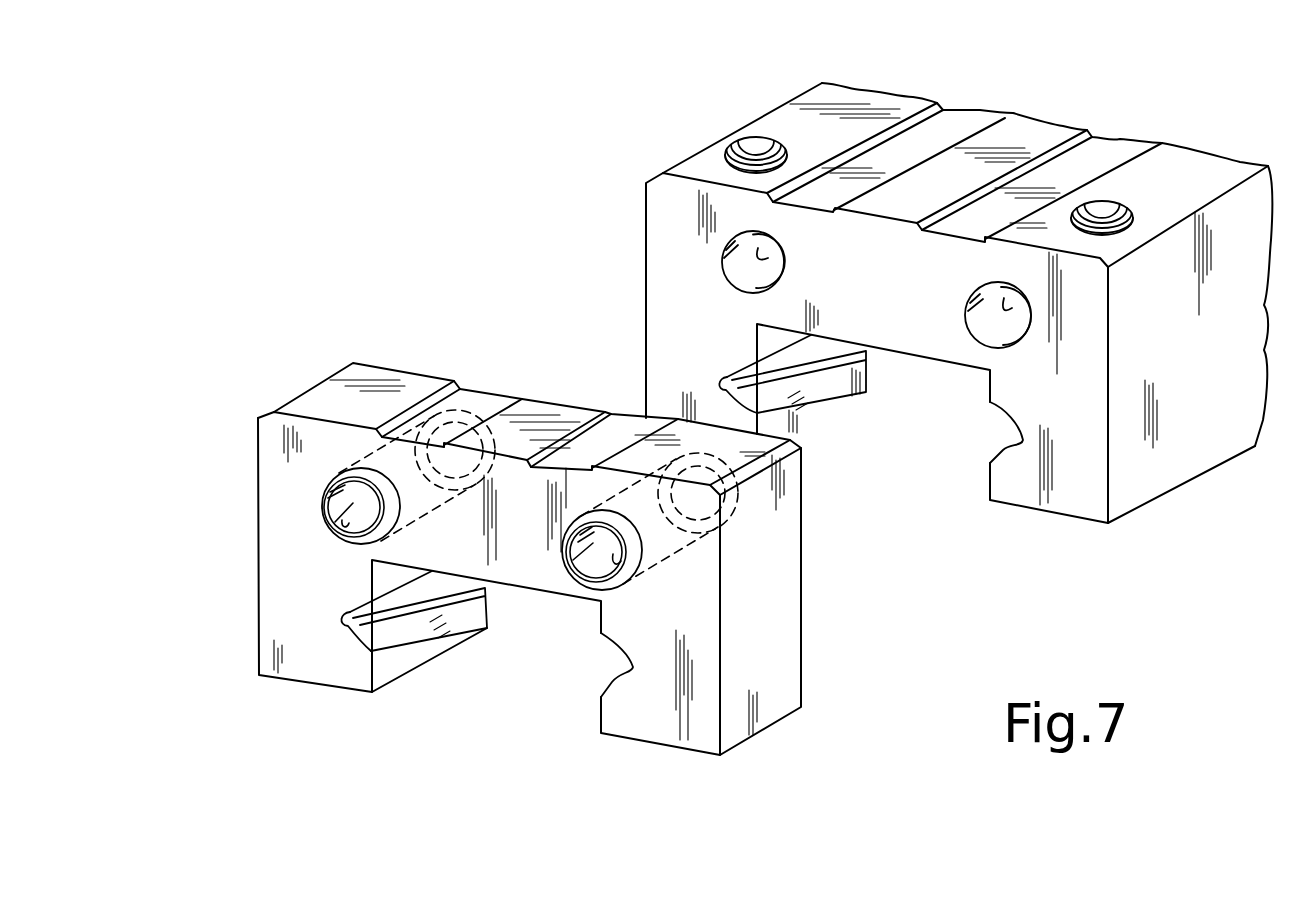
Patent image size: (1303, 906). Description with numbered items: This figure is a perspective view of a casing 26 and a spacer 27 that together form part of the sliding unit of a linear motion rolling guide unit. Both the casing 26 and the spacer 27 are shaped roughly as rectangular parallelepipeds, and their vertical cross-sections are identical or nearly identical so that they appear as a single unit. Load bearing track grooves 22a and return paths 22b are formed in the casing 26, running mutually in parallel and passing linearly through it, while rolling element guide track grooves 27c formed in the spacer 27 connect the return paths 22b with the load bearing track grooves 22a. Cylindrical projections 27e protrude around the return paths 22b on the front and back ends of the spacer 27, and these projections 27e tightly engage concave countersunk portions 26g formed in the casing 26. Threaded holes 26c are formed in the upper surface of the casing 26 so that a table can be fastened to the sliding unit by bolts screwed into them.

The casing 26 is at (1189, 467).
The spacer 27 is at (777, 723).
The threaded holes 26c is at (754, 146).
The return paths 22b is at (722, 248).
The countersunk portions 26g is at (727, 288).
The load bearing track grooves 22a is at (793, 350).
The rolling element guide track grooves 27c is at (394, 590).
The cylindrical projections 27e is at (355, 471).